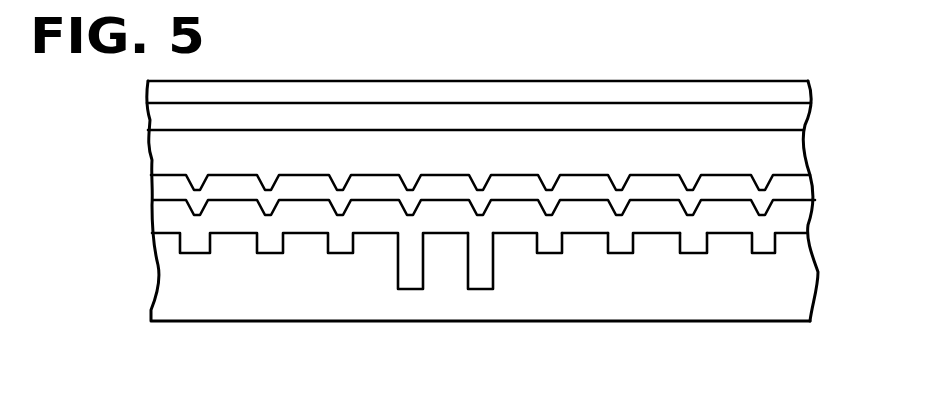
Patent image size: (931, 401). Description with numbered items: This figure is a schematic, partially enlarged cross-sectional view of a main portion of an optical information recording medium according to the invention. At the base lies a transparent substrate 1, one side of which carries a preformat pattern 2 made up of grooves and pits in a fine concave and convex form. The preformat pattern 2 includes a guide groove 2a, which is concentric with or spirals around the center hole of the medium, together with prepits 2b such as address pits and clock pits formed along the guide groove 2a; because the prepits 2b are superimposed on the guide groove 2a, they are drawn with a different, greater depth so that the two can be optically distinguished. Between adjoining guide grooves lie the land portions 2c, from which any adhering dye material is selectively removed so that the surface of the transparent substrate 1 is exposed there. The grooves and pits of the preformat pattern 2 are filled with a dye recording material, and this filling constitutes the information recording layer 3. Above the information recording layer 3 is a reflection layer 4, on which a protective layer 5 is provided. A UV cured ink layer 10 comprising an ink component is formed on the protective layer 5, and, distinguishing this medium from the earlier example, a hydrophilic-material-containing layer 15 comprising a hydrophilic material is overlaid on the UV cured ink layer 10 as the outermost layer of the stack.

The transparent substrate 1 is at (772, 300).
The preformat pattern 2 is at (765, 253).
The guide groove 2a is at (695, 255).
The prepits 2b is at (480, 291).
The land portions 2c is at (588, 233).
The information recording layer 3 is at (792, 219).
The reflection layer 4 is at (800, 191).
The protective layer 5 is at (787, 158).
The UV cured ink layer 10 is at (788, 120).
The hydrophilic-material-containing layer 15 is at (788, 94).